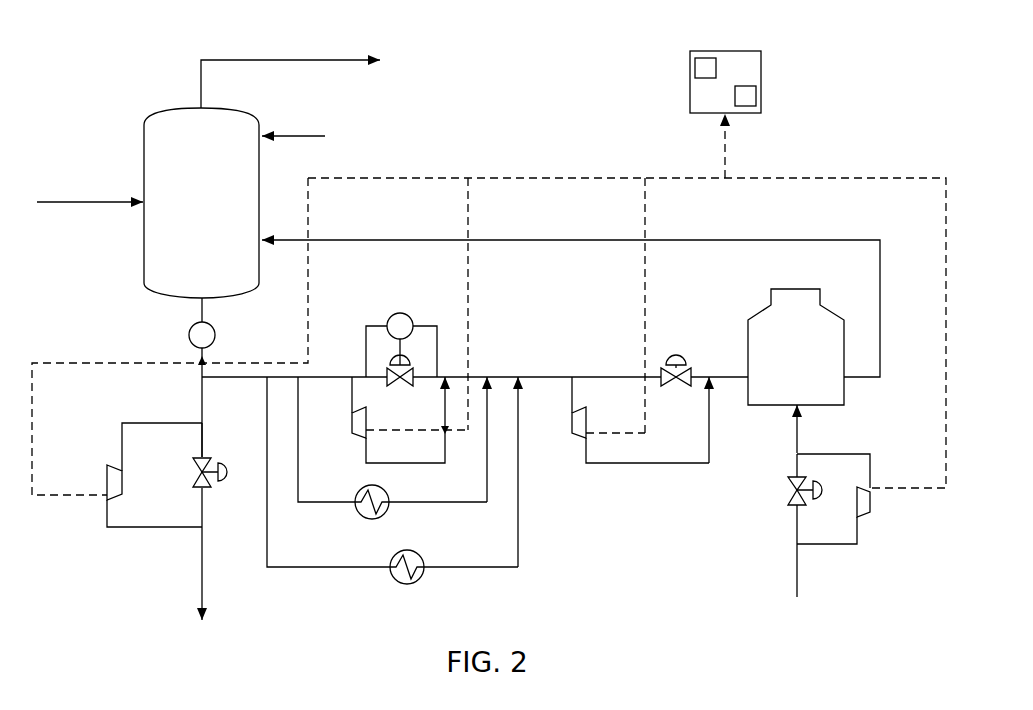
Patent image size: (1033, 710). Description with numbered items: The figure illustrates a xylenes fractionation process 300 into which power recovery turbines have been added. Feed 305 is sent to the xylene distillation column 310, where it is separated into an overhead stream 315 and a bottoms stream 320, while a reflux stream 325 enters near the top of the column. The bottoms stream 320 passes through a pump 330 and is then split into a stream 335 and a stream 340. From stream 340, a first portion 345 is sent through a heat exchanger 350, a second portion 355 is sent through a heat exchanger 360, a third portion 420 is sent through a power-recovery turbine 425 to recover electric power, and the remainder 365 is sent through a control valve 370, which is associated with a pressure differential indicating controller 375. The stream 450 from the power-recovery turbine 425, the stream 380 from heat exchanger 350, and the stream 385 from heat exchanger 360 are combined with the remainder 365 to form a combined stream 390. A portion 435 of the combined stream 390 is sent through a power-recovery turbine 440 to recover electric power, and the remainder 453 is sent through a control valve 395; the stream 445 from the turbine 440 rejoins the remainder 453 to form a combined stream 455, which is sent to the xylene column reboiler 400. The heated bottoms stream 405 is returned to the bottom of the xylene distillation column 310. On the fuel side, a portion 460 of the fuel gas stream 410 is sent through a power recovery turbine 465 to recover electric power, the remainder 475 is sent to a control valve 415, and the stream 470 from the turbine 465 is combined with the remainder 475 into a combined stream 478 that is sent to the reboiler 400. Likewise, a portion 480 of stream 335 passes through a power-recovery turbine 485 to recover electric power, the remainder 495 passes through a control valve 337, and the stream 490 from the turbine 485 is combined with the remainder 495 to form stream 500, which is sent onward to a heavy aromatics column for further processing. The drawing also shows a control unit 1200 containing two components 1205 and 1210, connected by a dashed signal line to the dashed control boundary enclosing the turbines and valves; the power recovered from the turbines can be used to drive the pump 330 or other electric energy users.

The xylenes fractionation process 300 is at (110, 64).
The feed 305 is at (75, 200).
The xylene distillation column 310 is at (150, 118).
The overhead stream 315 is at (309, 58).
The bottoms stream 320 is at (200, 321).
The reflux stream 325 is at (314, 136).
The pump 330 is at (189, 336).
The stream 335 is at (201, 404).
The control valve 337 is at (193, 477).
The stream 340 is at (250, 376).
The first portion 345 is at (320, 504).
The heat exchanger 350 is at (386, 533).
The second portion 355 is at (305, 568).
The heat exchanger 360 is at (407, 584).
The remainder 365 is at (358, 376).
The control valve 370 is at (412, 355).
The pressure differential indicating controller 375 is at (400, 312).
The stream 380 is at (488, 472).
The stream 385 is at (520, 534).
The combined stream 390 is at (527, 375).
The control valve 395 is at (676, 350).
The xylene column reboiler 400 is at (795, 288).
The heated bottoms stream 405 is at (880, 307).
The fuel gas stream 410 is at (798, 584).
The control valve 415 is at (787, 491).
The third portion 420 is at (352, 395).
The power-recovery turbine 425 is at (368, 413).
The portion 435 is at (574, 396).
The power-recovery turbine 440 is at (588, 412).
The stream 445 is at (708, 445).
The stream 450 is at (385, 463).
The remainder 453 is at (585, 375).
The combined stream 455 is at (717, 375).
The portion 460 is at (848, 545).
The power recovery turbine 465 is at (872, 508).
The stream 470 is at (870, 452).
The remainder 475 is at (797, 536).
The combined stream 478 is at (800, 428).
The portion 480 is at (186, 427).
The power-recovery turbine 485 is at (106, 486).
The stream 490 is at (134, 529).
The remainder 495 is at (203, 437).
The stream 500 is at (206, 570).
The controller 1200 is at (760, 51).
The processor 1205 is at (695, 66).
The memory 1210 is at (756, 95).